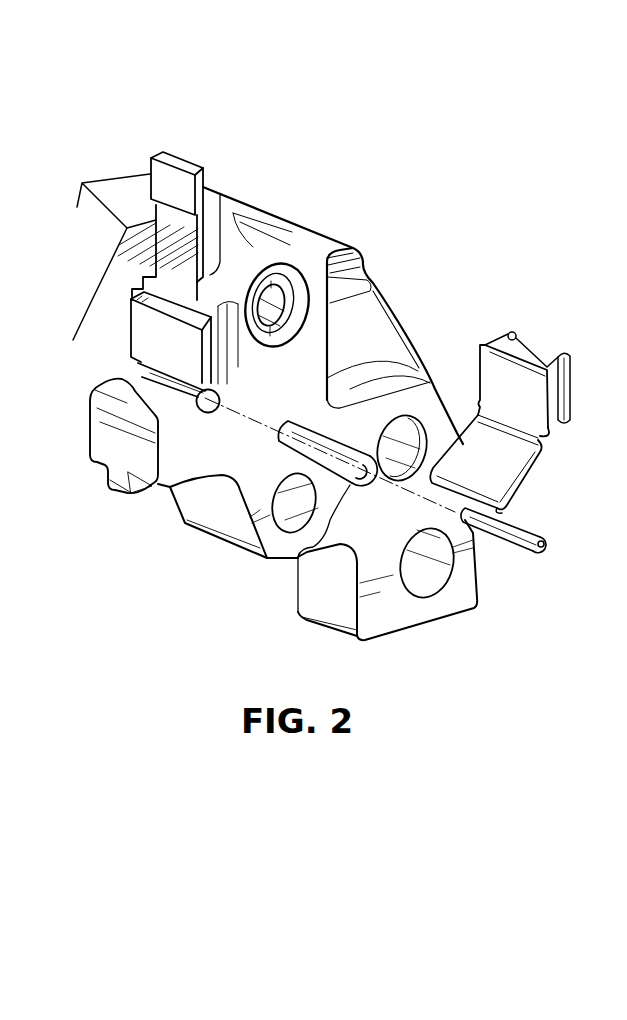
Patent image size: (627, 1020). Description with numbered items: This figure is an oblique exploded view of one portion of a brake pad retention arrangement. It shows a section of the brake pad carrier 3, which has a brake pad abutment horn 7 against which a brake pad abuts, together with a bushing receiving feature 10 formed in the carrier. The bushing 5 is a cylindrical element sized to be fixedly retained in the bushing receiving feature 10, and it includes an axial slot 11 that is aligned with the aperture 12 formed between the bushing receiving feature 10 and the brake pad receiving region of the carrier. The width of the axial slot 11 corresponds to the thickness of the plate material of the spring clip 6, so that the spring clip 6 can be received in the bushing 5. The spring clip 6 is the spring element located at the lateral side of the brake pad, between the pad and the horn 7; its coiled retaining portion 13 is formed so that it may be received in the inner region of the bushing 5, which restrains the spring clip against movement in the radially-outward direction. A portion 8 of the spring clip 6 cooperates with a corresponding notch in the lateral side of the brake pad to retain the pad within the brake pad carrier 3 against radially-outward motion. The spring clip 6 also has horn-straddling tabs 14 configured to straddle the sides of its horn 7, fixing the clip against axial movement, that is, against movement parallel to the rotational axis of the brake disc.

The brake pad carrier 3 is at (340, 243).
The bushing 5 is at (297, 587).
The spring clip 6 is at (528, 410).
The brake pad abutment horn 7 is at (176, 162).
The portion of spring clip 8 is at (513, 506).
The bushing receiving feature 10 is at (148, 378).
The axial slot 11 is at (305, 442).
The aperture 12 is at (92, 423).
The coiled retaining portion 13 is at (543, 550).
The horn-straddling tabs 14 is at (562, 352).